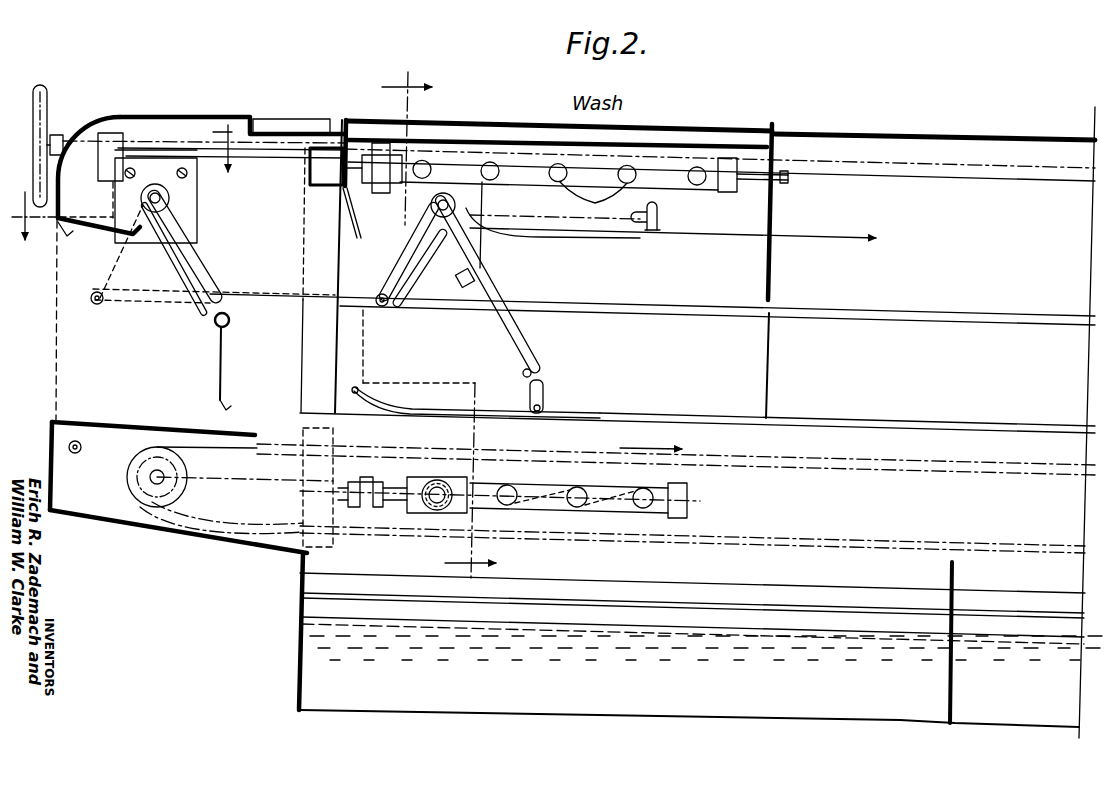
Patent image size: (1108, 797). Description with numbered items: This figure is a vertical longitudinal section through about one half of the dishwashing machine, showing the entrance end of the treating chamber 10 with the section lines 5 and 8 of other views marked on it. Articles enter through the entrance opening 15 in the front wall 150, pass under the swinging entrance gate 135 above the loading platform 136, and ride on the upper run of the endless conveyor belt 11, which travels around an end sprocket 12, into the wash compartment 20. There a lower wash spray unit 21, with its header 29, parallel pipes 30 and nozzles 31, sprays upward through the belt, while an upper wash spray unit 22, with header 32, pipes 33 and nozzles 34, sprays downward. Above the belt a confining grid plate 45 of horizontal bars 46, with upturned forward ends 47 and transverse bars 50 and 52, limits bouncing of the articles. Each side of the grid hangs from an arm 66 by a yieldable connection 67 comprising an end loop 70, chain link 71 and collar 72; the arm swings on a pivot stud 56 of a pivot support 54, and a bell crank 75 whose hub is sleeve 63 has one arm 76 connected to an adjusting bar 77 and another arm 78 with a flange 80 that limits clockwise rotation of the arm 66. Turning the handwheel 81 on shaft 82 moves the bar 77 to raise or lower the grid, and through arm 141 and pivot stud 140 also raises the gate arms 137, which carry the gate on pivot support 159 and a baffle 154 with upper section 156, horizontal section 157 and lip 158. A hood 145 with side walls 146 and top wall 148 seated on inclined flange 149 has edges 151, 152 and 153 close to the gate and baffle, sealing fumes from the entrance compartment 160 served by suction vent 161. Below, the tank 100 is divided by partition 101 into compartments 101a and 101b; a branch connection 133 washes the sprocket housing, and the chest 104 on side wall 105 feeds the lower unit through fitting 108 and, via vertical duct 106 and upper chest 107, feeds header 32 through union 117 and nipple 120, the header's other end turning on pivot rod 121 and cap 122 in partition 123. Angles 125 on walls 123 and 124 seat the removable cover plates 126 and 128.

The section line 5- 5 is at (439, 323).
The section line 8- 8 is at (125, 180).
The treating chamber 10 is at (876, 124).
The endless conveyor belt 11 is at (893, 468).
The end sprocket 12 is at (187, 487).
The entrance opening 15 is at (52, 346).
The wash compartment 20 is at (705, 365).
The lower wash spray unit 21 is at (607, 514).
The upper wash spray unit 22 is at (680, 191).
The header or manifold pipe 29 is at (555, 486).
The parallel horizontal pipes 30 is at (561, 508).
The nozzles 31 is at (505, 485).
The header or manifold pipe 32 is at (659, 222).
The parallel horizontal pipes 33 is at (548, 172).
The nozzles 34 is at (595, 204).
The confining plate or hold-down unit 45 is at (819, 239).
The horizontal bars 46 is at (724, 420).
The forward ends 47 is at (369, 411).
The end transverse bar 50 is at (350, 392).
The intermediate transverse bar 52 is at (538, 415).
The pivot support 54 is at (470, 206).
The pivot stud 56 is at (430, 205).
The hub sleeve 63 is at (443, 190).
The arm 66 is at (557, 216).
The yieldable or lost-motion connection 67 is at (640, 233).
The end loop extension 70 is at (523, 372).
The elongated chain link 71 is at (529, 393).
The collar 72 is at (545, 391).
The bell crank 75 is at (424, 258).
The bell crank arm 76 is at (410, 252).
The adjusting bar 77 is at (660, 303).
The bell crank arm 78 is at (483, 281).
The flange or bent portion 80 is at (462, 287).
The handwheel 81 is at (50, 110).
The shaft 82 is at (61, 137).
The tank 100 is at (298, 672).
The partition 101 is at (957, 570).
The tank compartment 101a is at (622, 713).
The tank compartment 101b is at (1003, 722).
The chest 104 is at (318, 485).
The side wall 105 is at (300, 616).
The vertical duct 106 is at (320, 251).
The chest 107 is at (316, 186).
The fitting unit 108 is at (401, 514).
The union fitting 117 is at (386, 143).
The nipple 120 is at (352, 178).
The pivot rod 121 is at (752, 180).
The cap 122 is at (726, 192).
The vertical partition 123 is at (776, 282).
The chamber wall 124 is at (341, 369).
The angle 125 is at (349, 122).
The cover plate 126 is at (653, 140).
The cover plate 128 is at (483, 119).
The branch connection 133 is at (78, 454).
The swinging entrance gate 135 is at (226, 362).
The loading platform 136 is at (121, 424).
The arm 137 is at (206, 279).
The pivot stud 140 is at (170, 198).
The arm 141 is at (106, 268).
The hood 145 is at (79, 218).
The side wall 146 is at (55, 322).
The top wall 148 is at (85, 236).
The inclined flange 149 is at (62, 237).
The front wall 150 is at (57, 223).
The rear lower vertical edge 151 is at (222, 382).
The upper inclined edge 152 is at (206, 312).
The short horizontal edge 153 is at (205, 330).
The baffle 154 is at (166, 258).
The upper section 156 is at (172, 251).
The horizontal section 157 is at (222, 306).
The lip 158 is at (236, 322).
The pivot support 159 is at (216, 331).
The entrance compartment 160 is at (282, 280).
The suction vent 161 is at (275, 119).